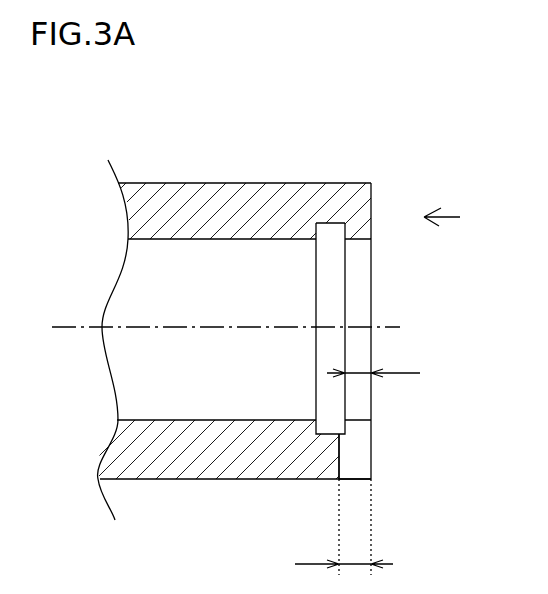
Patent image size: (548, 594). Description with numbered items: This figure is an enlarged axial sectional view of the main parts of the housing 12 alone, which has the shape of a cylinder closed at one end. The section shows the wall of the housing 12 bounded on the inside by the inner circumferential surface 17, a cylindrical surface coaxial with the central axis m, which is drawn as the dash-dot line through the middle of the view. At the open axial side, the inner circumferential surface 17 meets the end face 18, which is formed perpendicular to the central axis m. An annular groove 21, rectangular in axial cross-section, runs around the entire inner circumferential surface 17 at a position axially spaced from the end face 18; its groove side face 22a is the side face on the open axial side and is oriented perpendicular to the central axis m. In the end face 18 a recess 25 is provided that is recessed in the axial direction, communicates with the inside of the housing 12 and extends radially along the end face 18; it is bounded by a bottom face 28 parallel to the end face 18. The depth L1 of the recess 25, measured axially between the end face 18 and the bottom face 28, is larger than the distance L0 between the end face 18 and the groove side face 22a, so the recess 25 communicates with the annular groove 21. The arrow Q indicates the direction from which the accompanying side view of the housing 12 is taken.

The housing 12 is at (211, 183).
The inner circumferential surface 17 is at (277, 420).
The end face 18 is at (372, 198).
The annular groove 21 is at (330, 228).
The groove side face 22a is at (331, 232).
The bottom face 28 is at (414, 472).
The recess 25 is at (339, 450).
The central axis m is at (66, 318).
The arrow Q is at (442, 207).
The distance L0 is at (373, 363).
The depth L1 is at (343, 527).